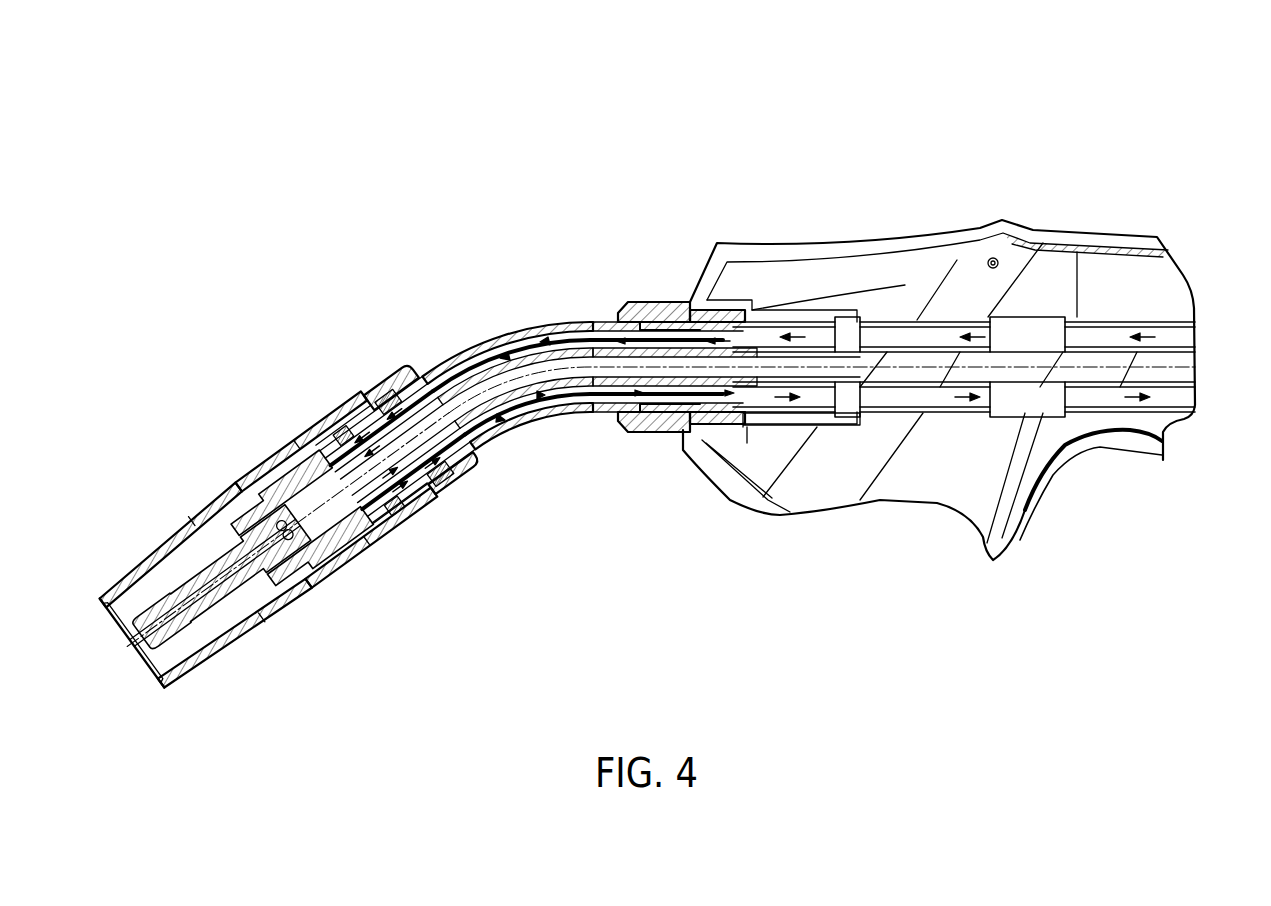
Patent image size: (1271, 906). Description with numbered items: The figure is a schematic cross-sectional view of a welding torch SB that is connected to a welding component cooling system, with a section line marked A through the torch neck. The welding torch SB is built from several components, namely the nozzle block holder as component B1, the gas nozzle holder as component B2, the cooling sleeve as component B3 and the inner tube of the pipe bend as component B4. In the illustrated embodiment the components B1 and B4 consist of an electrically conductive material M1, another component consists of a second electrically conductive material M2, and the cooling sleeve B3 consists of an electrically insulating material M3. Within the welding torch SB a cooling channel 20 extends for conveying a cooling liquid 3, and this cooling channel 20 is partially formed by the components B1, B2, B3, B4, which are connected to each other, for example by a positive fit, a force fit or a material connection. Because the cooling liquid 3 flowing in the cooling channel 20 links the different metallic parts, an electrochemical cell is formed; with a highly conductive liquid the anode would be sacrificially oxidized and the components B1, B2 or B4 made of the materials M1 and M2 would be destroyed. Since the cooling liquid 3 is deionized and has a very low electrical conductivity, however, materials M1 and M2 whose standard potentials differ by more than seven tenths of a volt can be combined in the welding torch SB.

The welding torch SB is at (240, 140).
The nozzle block holder B1 is at (235, 440).
The electrically conductive material M1 is at (334, 410).
The gas nozzle holder B2 is at (456, 243).
The another electrically conductive material M2 is at (394, 380).
The cooling sleeve B3 is at (395, 290).
The electrically insulating material M3 is at (385, 372).
The inner tube of the pipe bend B4 is at (593, 383).
The cooling liquid 3 is at (507, 352).
The cooling channel 20 is at (557, 352).
The section line A- A is at (440, 503).